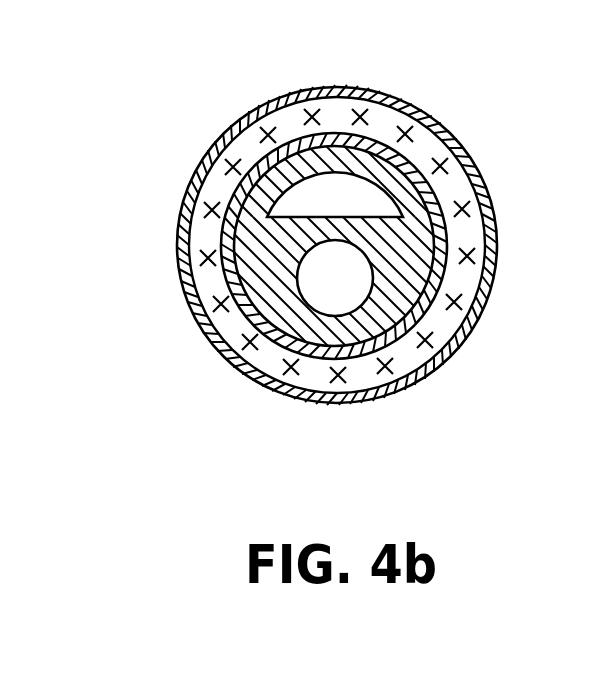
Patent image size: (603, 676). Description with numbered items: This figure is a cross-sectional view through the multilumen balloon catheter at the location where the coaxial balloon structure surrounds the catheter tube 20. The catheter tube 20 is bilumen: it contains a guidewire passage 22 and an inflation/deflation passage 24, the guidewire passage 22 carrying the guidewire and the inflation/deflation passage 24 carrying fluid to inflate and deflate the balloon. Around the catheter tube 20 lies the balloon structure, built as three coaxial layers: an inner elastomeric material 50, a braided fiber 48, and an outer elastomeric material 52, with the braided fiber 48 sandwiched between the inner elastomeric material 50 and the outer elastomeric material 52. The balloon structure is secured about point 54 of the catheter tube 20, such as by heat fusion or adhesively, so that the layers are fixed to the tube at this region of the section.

The catheter tube 20 is at (332, 328).
The guidewire passage 22 is at (320, 290).
The inflation/deflation passage 24 is at (313, 183).
The braided fiber 48 is at (457, 190).
The inner elastomeric material 50 is at (440, 248).
The outer elastomeric material 52 is at (443, 135).
The point of the catheter tube 54 is at (373, 152).